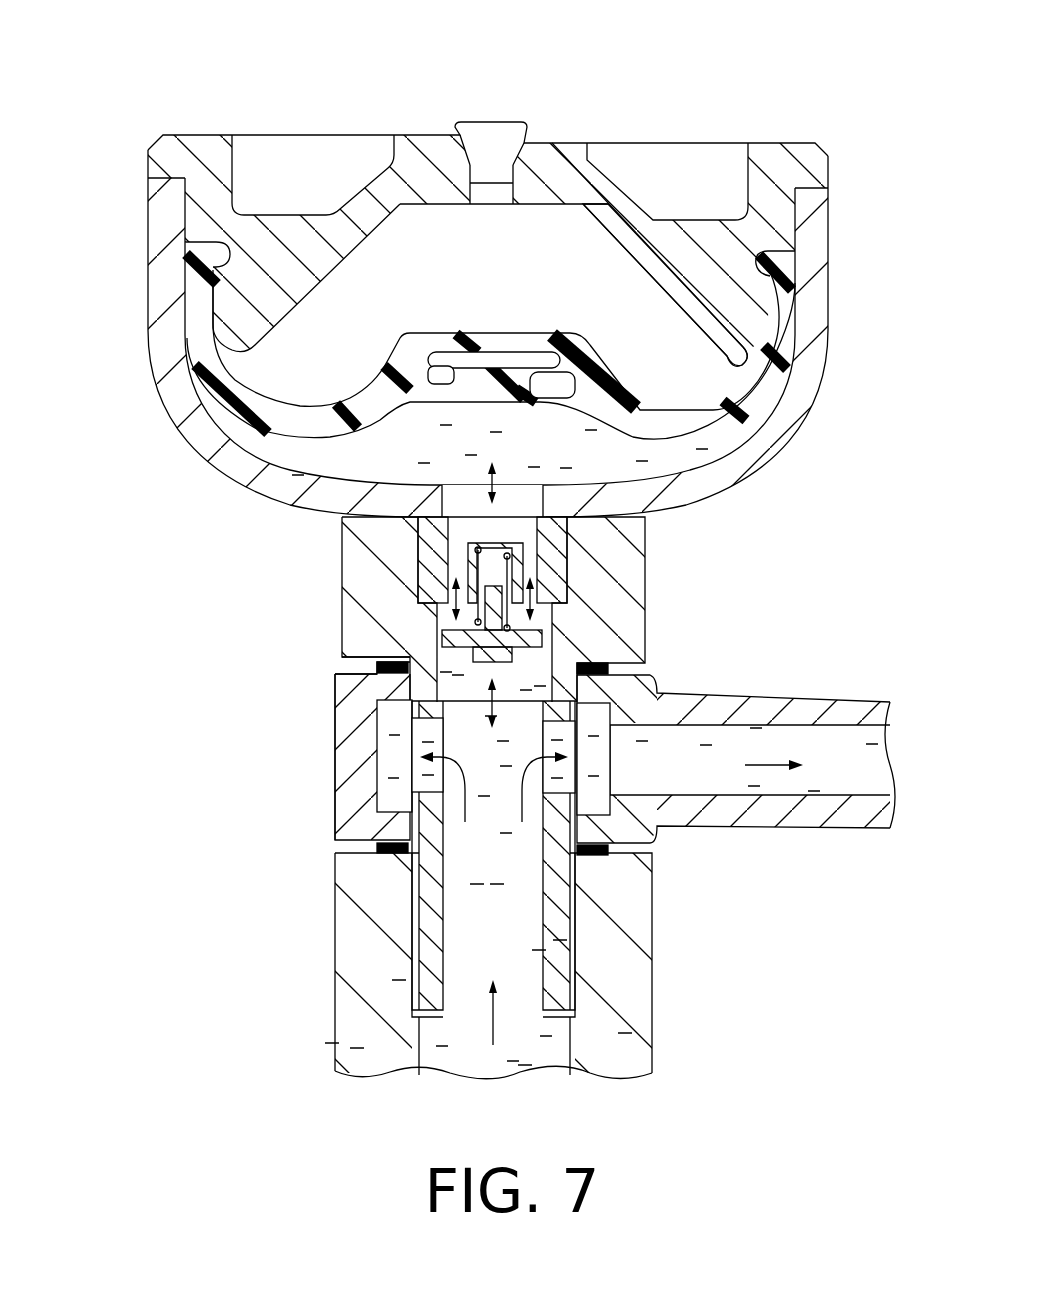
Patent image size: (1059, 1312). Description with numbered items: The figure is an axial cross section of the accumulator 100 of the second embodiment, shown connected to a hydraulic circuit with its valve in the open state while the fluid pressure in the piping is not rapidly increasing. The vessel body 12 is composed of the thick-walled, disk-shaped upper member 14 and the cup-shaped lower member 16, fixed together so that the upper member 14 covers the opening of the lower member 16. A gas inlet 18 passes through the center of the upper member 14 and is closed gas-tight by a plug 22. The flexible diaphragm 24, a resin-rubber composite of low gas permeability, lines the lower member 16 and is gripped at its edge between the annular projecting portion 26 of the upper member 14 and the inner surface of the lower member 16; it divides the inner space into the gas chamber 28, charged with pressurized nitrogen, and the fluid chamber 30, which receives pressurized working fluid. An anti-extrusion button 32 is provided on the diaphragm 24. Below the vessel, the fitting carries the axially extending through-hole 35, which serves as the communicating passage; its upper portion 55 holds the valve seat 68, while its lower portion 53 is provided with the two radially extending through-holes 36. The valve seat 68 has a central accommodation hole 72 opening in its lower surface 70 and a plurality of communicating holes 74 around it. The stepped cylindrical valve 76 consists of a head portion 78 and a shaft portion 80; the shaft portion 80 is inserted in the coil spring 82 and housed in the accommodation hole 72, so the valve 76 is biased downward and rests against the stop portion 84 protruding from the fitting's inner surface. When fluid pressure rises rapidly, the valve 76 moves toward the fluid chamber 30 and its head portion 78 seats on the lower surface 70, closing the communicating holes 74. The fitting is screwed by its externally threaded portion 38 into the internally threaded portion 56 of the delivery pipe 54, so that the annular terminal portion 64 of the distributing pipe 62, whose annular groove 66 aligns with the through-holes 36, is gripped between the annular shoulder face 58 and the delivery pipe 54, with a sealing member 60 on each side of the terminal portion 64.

The vessel body 12 is at (62, 50).
The upper member 14 is at (198, 120).
The lower member 16 is at (133, 190).
The gas inlet 18 is at (480, 196).
The plug 22 is at (506, 134).
The flexible diaphragm 24 is at (352, 384).
The projecting portion 26 is at (745, 342).
The gas chamber 28 is at (508, 281).
The fluid chamber 30 is at (302, 437).
The anti-extrusion button 32 is at (530, 348).
The axially extending through-hole 35 is at (447, 990).
The radially extending through-holes 36 is at (388, 844).
The externally threaded portion 38 is at (582, 955).
The lower portion of the through-hole 53 is at (477, 929).
The delivery pipe 54 is at (633, 1045).
The upper portion of the through-hole 55 is at (565, 684).
The internally threaded portion 56 is at (568, 1056).
The annular shoulder face 58 is at (338, 672).
The sealing member 60 is at (353, 675).
The distributing pipe 62 is at (790, 823).
The terminal portion 64 is at (378, 748).
The annular groove 66 is at (408, 775).
The valve seat 68 is at (400, 527).
The lower surface of the valve seat 70 is at (547, 624).
The accommodation hole 72 is at (575, 528).
The communicating holes 74 is at (455, 578).
The stepped cylindrical valve 76 is at (232, 572).
The head portion 78 is at (470, 632).
The shaft portion 80 is at (478, 615).
The coil spring 82 is at (455, 503).
The stop portion 84 is at (515, 655).
The accumulator 100 is at (806, 78).